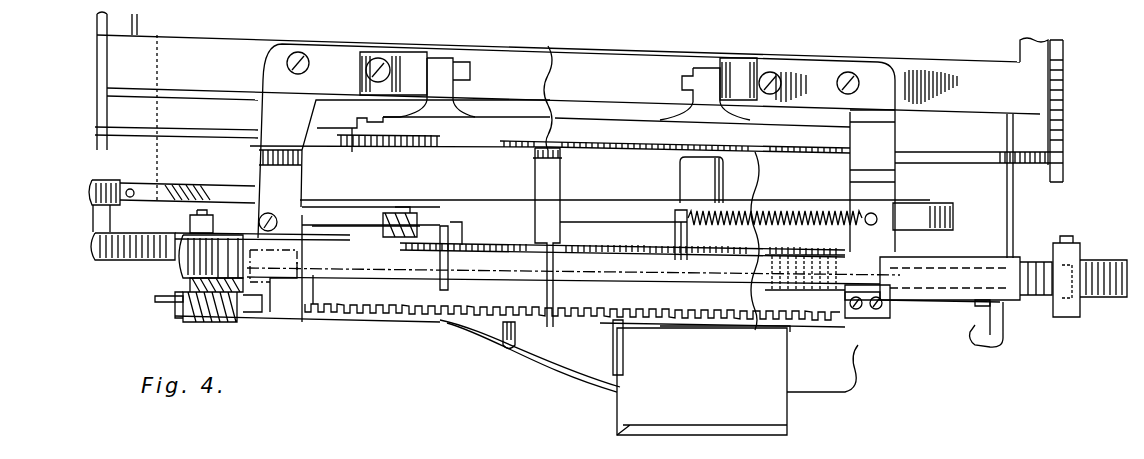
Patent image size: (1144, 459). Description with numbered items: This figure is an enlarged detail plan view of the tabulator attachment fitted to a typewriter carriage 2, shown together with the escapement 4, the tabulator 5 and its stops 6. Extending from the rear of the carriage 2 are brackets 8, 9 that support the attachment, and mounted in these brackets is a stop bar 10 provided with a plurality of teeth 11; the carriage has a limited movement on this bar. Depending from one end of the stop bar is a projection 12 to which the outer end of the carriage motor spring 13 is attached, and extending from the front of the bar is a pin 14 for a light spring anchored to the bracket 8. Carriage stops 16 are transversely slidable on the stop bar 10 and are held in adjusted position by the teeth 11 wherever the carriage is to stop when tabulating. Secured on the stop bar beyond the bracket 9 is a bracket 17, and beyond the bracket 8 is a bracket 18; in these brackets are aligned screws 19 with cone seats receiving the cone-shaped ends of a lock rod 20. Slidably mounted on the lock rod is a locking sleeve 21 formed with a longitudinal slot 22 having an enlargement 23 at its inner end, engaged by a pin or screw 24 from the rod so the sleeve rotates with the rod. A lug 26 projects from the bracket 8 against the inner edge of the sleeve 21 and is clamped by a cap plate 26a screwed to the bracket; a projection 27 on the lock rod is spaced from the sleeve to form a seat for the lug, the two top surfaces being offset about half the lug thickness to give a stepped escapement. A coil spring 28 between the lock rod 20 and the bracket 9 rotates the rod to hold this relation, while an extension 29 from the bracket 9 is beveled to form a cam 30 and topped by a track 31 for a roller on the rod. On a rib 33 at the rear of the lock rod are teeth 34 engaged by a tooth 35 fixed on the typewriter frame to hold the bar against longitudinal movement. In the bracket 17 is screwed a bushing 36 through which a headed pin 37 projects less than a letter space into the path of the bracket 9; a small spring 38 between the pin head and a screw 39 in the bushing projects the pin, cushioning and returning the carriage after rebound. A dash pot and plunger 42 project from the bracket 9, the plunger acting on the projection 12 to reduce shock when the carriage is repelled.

The carriage 2 is at (627, 58).
The escapement 4 is at (690, 172).
The tabulator 5 is at (727, 388).
The stops 6 is at (690, 325).
The bracket 8 is at (894, 197).
The bracket 9 is at (288, 188).
The stop bar 10 is at (125, 258).
The teeth 11 is at (463, 243).
The projection 12 is at (91, 206).
The carriage motor spring 13 is at (167, 193).
The pin 14 is at (675, 212).
The carriage stops 16 is at (777, 213).
The bracket 17 is at (203, 250).
The bracket 18 is at (1060, 317).
The screws 19 is at (182, 248).
The lock rod 20 is at (303, 314).
The locking sleeve 21 is at (967, 272).
The longitudinal slot 22 is at (923, 307).
The enlargement 23 is at (983, 307).
The pin or screw 24 is at (1007, 343).
The lug 26 is at (877, 300).
The cap plate 26a is at (850, 327).
The projection 27 is at (857, 292).
The coil spring 28 is at (205, 262).
The extension 29 is at (313, 223).
The cam 30 is at (388, 213).
The track 31 is at (353, 230).
The rib 33 is at (422, 297).
The teeth 34 is at (395, 312).
The tooth 35 is at (613, 323).
The bushing 36 is at (228, 316).
The headed pin 37 is at (240, 317).
The spring 38 is at (151, 318).
The screw 39 is at (183, 298).
The dash pot and plunger 42 is at (567, 170).